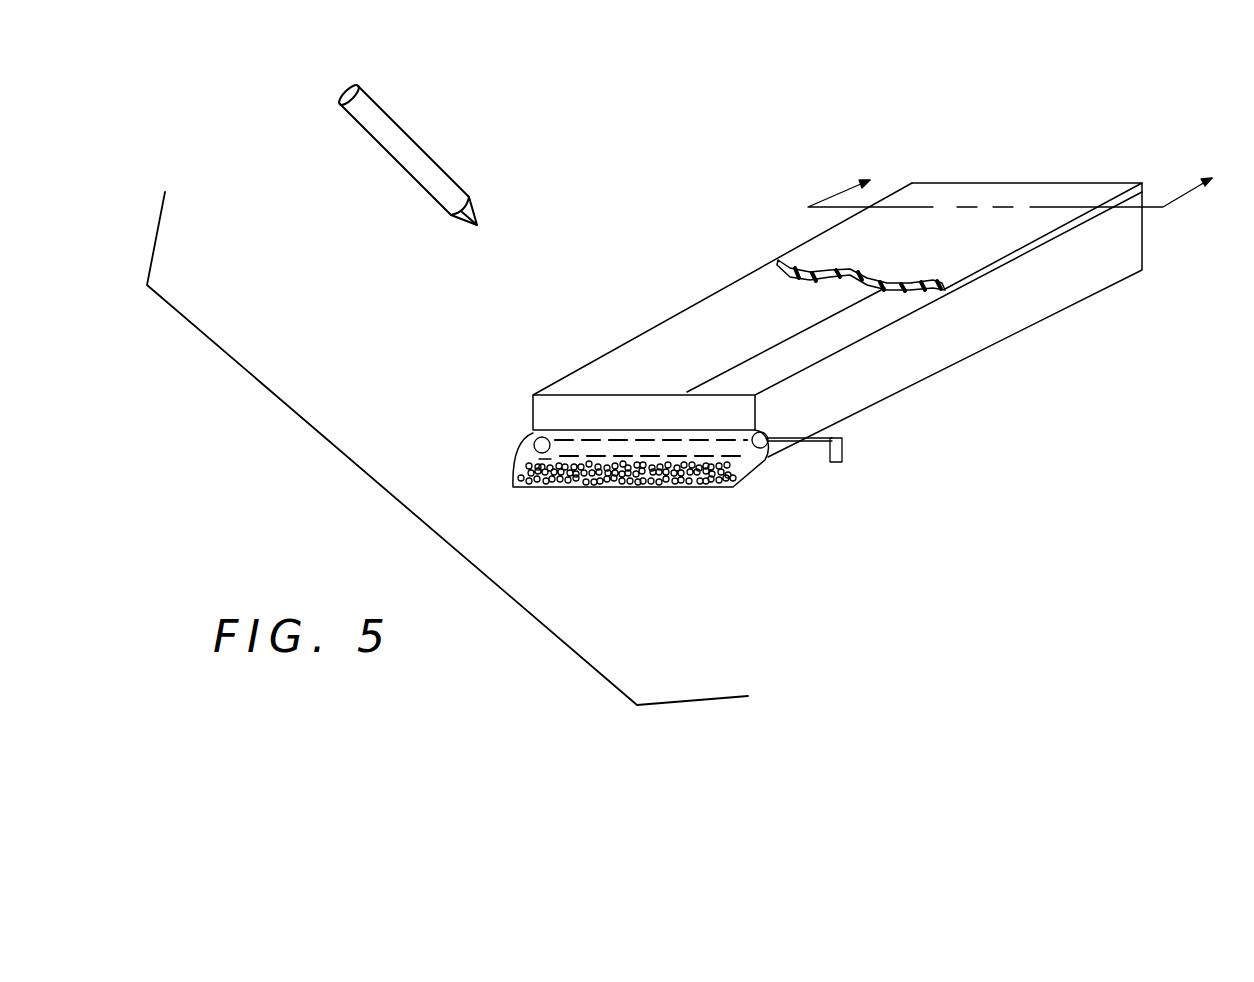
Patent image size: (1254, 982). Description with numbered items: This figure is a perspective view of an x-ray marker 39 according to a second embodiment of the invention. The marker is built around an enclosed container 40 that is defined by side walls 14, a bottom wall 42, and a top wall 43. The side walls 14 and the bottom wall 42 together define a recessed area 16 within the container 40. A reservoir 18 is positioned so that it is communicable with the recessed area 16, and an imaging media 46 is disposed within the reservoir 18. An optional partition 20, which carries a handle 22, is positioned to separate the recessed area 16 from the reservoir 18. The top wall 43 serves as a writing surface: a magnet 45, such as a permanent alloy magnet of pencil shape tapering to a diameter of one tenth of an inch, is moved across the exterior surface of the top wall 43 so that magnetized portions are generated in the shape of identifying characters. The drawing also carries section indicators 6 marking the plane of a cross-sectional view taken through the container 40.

The section line 6- 6 is at (1026, 184).
The side wall 14 is at (753, 277).
The recessed area 16 is at (748, 372).
The reservoir 18 is at (533, 453).
The partition 20 is at (713, 448).
The handle 22 is at (846, 457).
The x-ray marker 39 is at (772, 196).
The container 40 is at (1048, 350).
The bottom wall 42 is at (827, 322).
The top wall 43 is at (1033, 197).
The magnet 45 is at (420, 158).
The imaging media 46 is at (615, 486).